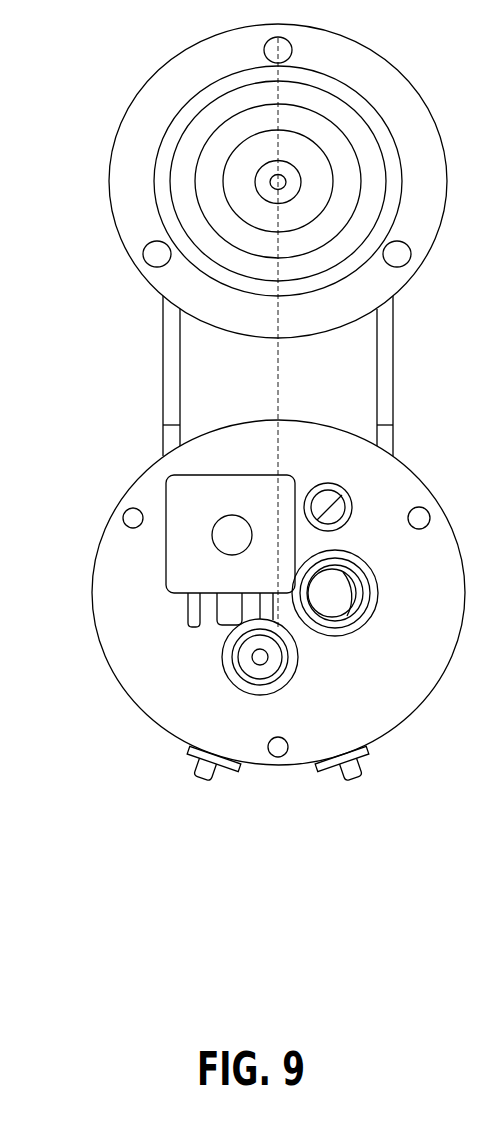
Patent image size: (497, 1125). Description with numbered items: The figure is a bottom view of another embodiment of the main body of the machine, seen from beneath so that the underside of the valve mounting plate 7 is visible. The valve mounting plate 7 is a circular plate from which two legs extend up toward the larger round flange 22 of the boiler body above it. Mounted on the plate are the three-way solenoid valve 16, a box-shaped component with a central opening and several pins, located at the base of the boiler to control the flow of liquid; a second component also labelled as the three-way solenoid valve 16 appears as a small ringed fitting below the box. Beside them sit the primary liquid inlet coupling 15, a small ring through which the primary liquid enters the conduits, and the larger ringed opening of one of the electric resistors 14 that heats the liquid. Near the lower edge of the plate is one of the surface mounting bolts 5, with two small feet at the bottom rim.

The upper flange 22 is at (156, 71).
The valve mounting plate 7 is at (106, 663).
The three-way solenoid valve 16 is at (178, 501).
The primary liquid inlet coupling 15 is at (357, 502).
The resistor 14 is at (320, 642).
The surface mounting bolt 5 is at (288, 760).